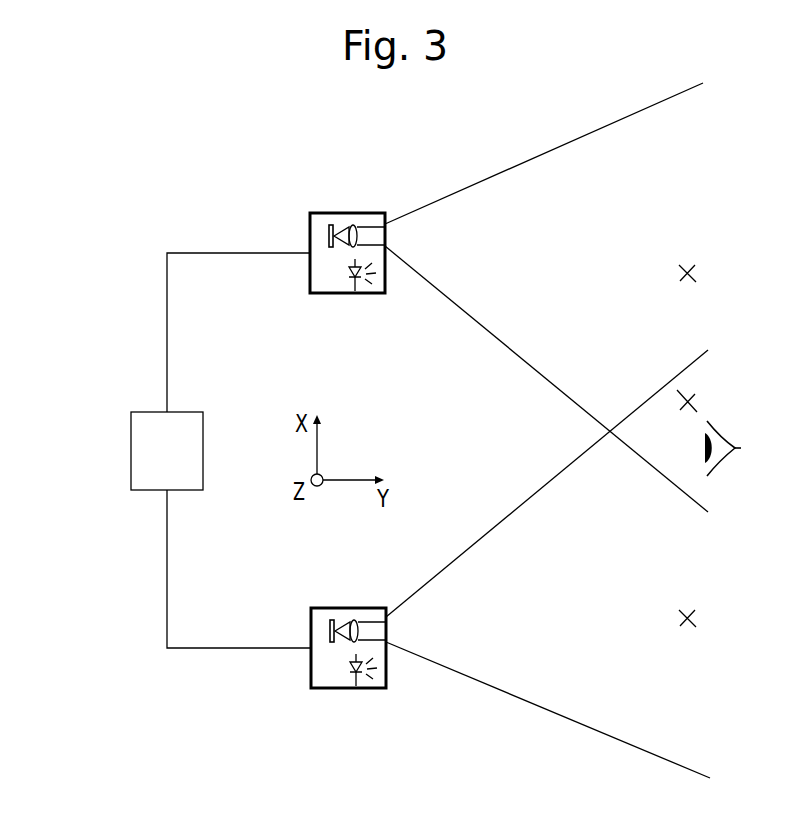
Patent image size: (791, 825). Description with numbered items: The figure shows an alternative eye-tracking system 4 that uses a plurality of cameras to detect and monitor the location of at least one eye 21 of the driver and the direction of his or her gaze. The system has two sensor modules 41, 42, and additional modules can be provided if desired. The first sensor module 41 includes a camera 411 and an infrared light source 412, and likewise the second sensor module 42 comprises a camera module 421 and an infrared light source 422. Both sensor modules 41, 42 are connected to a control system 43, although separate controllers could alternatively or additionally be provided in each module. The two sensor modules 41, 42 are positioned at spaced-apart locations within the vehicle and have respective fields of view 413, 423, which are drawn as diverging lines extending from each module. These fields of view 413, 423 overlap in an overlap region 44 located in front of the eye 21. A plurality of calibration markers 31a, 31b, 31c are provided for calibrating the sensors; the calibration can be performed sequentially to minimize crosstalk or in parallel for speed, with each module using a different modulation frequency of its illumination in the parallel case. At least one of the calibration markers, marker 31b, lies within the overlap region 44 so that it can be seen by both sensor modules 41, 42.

The eye-tracking system 4 is at (112, 320).
The sensor module 41 is at (310, 216).
The camera 411 is at (343, 222).
The infrared light source 412 is at (349, 283).
The field of view 413 is at (531, 157).
The sensor module 42 is at (311, 611).
The camera module 421 is at (352, 617).
The infrared light source 422 is at (351, 686).
The field of view 423 is at (545, 708).
The control system 43 is at (131, 440).
The overlap region 44 is at (630, 432).
The calibration marker 31a is at (680, 272).
The calibration marker 31b is at (697, 398).
The calibration marker 31c is at (680, 620).
The eye 21 is at (722, 460).